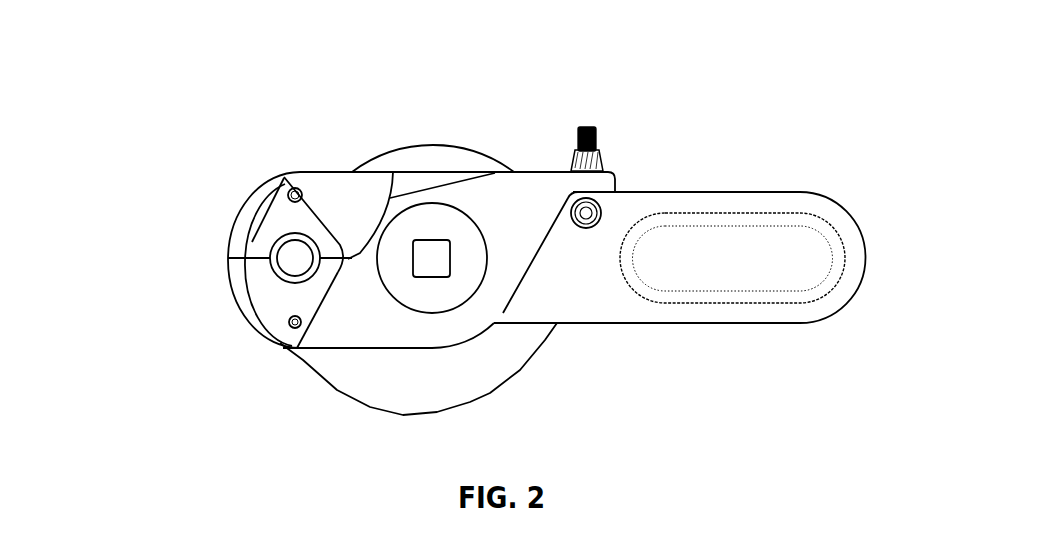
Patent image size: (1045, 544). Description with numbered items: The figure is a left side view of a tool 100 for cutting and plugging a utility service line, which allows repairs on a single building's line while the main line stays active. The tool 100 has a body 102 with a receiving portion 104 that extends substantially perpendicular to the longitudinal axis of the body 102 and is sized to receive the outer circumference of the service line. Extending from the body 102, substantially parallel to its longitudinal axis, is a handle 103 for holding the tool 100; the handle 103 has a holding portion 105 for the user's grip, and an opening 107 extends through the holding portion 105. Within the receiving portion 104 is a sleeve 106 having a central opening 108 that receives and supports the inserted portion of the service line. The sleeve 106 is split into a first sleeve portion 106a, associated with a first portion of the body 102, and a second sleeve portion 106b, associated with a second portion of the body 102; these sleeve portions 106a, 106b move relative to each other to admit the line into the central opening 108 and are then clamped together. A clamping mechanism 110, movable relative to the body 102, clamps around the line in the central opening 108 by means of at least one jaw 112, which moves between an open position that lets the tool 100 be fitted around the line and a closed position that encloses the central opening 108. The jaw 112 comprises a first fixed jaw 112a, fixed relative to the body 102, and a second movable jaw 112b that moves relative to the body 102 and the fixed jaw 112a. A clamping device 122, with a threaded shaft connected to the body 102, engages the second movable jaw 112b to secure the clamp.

The tool 100 is at (515, 122).
The body 102 is at (467, 307).
The handle 103 is at (846, 214).
The receiving portion 104 is at (240, 302).
The holding portion 105 is at (767, 311).
The sleeve 106 is at (227, 216).
The first sleeve portion 106a is at (262, 222).
The second sleeve portion 106b is at (268, 333).
The opening 107 is at (797, 265).
The central opening 108 is at (295, 260).
The clamping mechanism 110 is at (279, 361).
The jaw 112 is at (276, 170).
The first fixed jaw 112a is at (370, 213).
The second movable jaw 112b is at (370, 310).
The clamping device 122 is at (611, 118).